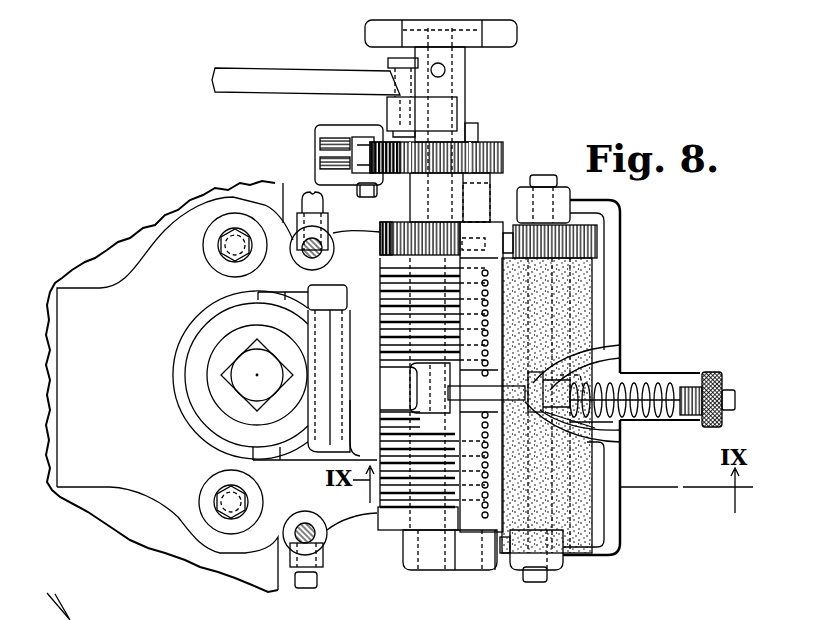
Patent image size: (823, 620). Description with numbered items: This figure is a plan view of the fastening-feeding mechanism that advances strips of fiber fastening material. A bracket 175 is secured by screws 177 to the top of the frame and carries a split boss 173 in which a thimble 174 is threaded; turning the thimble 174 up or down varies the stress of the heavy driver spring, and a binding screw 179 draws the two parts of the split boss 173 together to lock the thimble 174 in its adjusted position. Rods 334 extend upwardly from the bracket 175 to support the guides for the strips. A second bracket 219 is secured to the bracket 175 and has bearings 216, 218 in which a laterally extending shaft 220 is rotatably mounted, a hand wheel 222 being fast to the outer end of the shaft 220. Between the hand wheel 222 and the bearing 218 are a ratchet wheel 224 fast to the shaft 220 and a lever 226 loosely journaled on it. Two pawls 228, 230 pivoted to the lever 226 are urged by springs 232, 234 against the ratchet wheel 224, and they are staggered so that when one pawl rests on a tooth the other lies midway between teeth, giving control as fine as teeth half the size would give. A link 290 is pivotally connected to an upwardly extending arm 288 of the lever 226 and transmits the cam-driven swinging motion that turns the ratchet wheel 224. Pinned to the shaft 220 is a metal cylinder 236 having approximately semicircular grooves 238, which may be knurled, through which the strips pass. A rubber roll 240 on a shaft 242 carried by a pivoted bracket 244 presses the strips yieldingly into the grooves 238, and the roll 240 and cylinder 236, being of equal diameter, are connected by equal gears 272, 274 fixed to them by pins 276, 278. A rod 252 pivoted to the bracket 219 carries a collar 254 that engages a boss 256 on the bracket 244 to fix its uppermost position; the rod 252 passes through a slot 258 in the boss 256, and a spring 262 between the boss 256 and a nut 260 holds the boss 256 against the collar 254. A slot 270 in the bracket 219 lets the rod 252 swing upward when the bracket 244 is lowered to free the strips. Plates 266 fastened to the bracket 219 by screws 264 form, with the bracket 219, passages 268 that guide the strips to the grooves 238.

The split boss 173 is at (185, 373).
The thimble 174 is at (215, 345).
The bracket 175 is at (215, 548).
The screws 177 is at (217, 253).
The binding screw 179 is at (312, 285).
The bearing 216 is at (415, 566).
The bearing 218 is at (417, 207).
The bracket 219 is at (462, 565).
The shaft 220 is at (418, 550).
The hand wheel 222 is at (516, 32).
The ratchet wheel 224 is at (503, 146).
The lever 226 is at (457, 97).
The pawl 228 is at (365, 148).
The pawl 230 is at (360, 186).
The spring 232 is at (325, 135).
The spring 234 is at (320, 160).
The metal cylinder 236 is at (400, 527).
The grooves 238 is at (396, 272).
The roll 240 is at (592, 540).
The shaft 242 is at (548, 581).
The bracket 244 is at (606, 545).
The rod 252 is at (601, 456).
The collar 254 is at (588, 352).
The boss 256 is at (597, 441).
The slot 258 is at (604, 366).
The nut 260 is at (722, 375).
The spring 262 is at (672, 386).
The screws 264 is at (471, 237).
The plates 266 is at (594, 297).
The passages 268 is at (495, 330).
The slot 270 is at (433, 402).
The gear 272 is at (597, 236).
The gear 274 is at (390, 228).
The pin 276 is at (598, 268).
The pin 278 is at (392, 267).
The arm 288 is at (443, 113).
The link 290 is at (230, 77).
The rods 334 is at (296, 240).